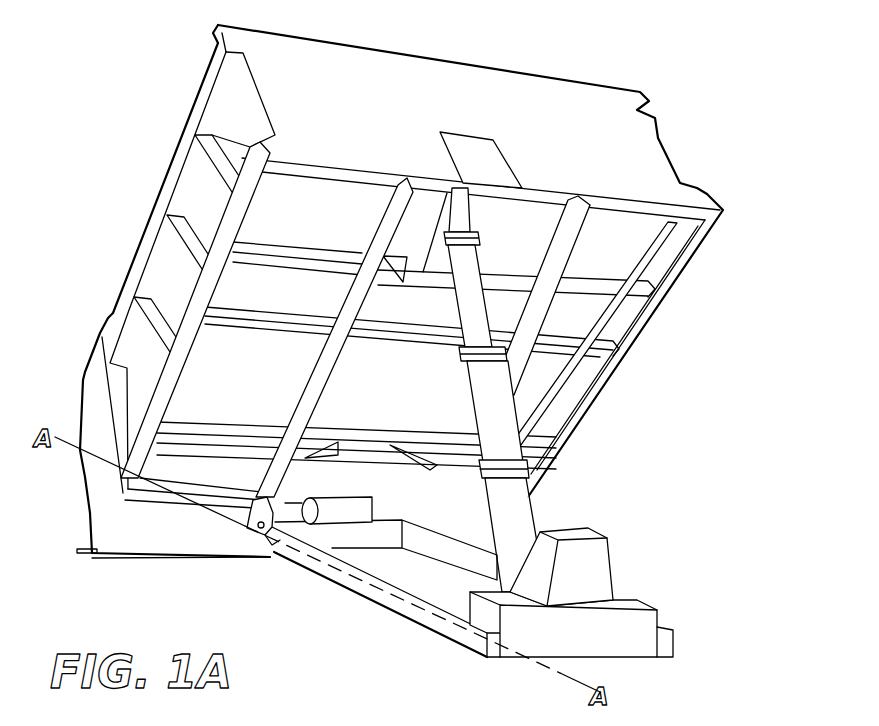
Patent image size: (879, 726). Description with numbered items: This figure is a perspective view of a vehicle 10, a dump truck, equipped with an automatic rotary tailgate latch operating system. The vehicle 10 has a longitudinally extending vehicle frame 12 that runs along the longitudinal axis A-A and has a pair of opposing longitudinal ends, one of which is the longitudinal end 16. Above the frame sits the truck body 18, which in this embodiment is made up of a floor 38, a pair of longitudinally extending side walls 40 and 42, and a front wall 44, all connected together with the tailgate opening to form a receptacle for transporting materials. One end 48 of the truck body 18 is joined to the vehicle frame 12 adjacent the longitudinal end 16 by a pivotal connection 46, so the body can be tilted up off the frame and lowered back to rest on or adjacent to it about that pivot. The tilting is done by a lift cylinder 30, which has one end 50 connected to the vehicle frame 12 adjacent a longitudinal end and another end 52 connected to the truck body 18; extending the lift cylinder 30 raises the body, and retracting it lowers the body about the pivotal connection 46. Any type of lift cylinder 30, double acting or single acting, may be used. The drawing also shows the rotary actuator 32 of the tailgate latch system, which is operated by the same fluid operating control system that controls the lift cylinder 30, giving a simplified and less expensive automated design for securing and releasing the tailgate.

The vehicle 10 is at (655, 362).
The vehicle frame 12 is at (393, 606).
The longitudinal end 16 is at (272, 535).
The vehicle body 18 is at (181, 272).
The lift cylinder 30 is at (533, 362).
The rotary actuator 32 is at (327, 525).
The floor 38 is at (530, 385).
The side wall 40 is at (238, 115).
The side wall 42 is at (672, 290).
The front wall 44 is at (588, 112).
The pivotal connection 46 is at (256, 521).
The end of truck body 48 is at (162, 530).
The end of lift cylinder 50 is at (517, 523).
The other end of lift cylinder 52 is at (461, 216).